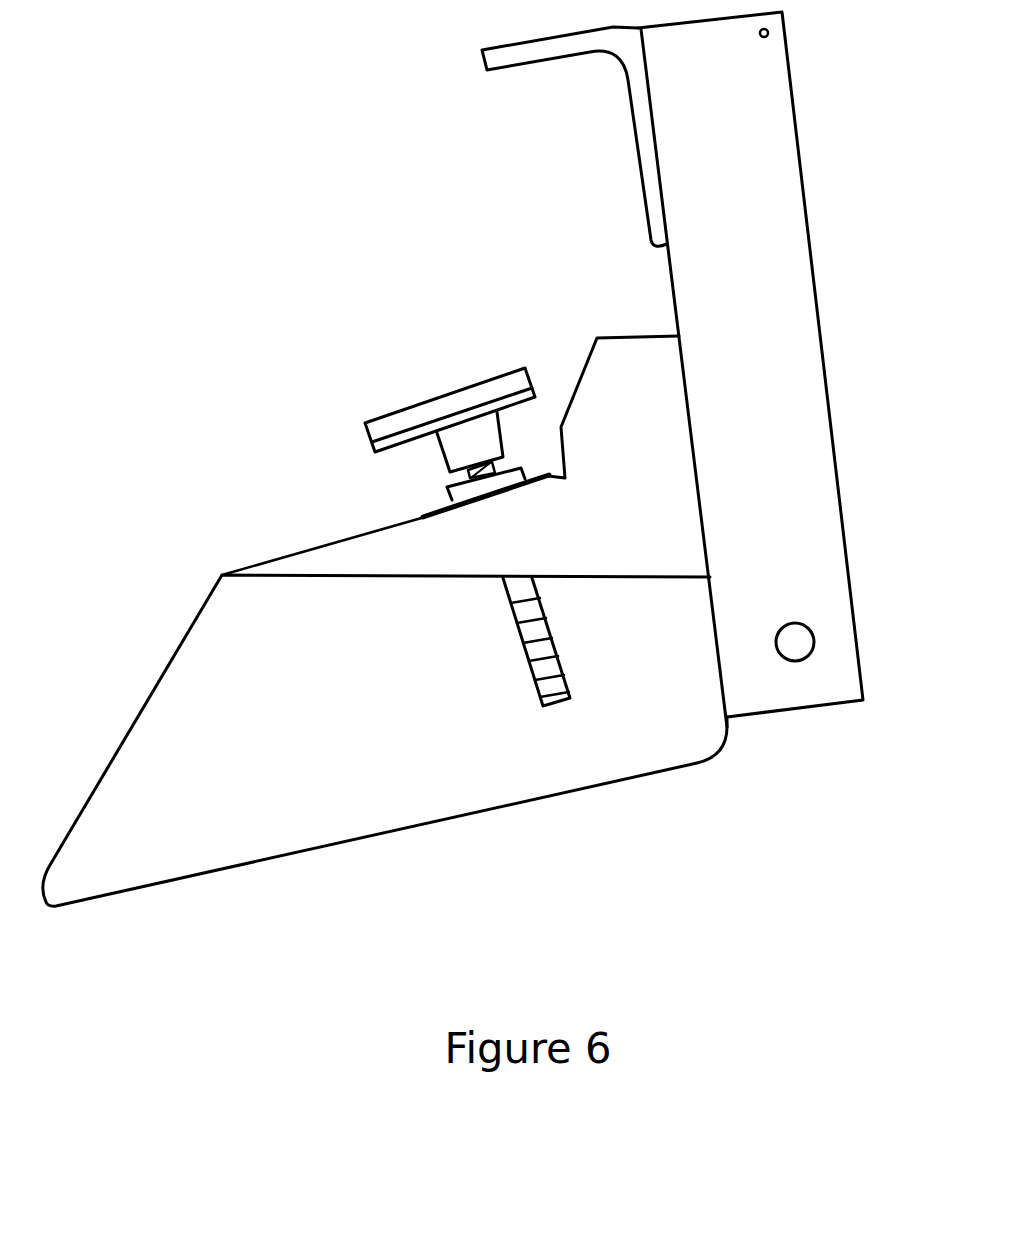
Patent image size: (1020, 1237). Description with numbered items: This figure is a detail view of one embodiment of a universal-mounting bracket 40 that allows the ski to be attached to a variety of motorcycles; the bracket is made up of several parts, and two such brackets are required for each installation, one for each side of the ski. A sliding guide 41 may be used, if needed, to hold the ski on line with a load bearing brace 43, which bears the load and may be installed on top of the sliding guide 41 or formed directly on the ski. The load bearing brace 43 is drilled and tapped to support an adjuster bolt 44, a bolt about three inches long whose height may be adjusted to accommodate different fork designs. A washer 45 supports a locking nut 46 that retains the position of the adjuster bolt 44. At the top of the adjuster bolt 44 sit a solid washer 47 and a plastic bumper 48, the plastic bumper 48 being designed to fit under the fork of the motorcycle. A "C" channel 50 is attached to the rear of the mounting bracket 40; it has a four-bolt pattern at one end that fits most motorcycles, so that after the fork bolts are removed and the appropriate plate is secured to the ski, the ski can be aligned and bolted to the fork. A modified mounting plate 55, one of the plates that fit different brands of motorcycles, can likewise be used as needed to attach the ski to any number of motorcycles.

The universal-mounting bracket 40 is at (266, 366).
The sliding guide 41 is at (147, 673).
The load bearing brace 43 is at (248, 585).
The adjuster bolt 44 is at (517, 647).
The washer 45 is at (427, 515).
The locking nut 46 is at (507, 478).
The solid washer 47 is at (440, 457).
The plastic bumper 48 is at (395, 405).
The "C" channel 50 is at (818, 382).
The modified mounting plate 55 is at (627, 137).